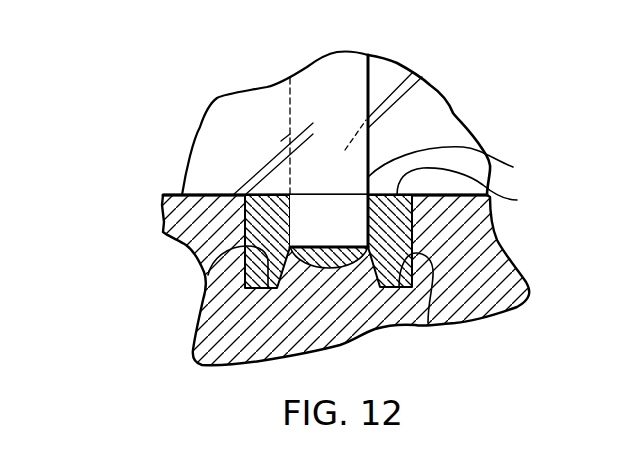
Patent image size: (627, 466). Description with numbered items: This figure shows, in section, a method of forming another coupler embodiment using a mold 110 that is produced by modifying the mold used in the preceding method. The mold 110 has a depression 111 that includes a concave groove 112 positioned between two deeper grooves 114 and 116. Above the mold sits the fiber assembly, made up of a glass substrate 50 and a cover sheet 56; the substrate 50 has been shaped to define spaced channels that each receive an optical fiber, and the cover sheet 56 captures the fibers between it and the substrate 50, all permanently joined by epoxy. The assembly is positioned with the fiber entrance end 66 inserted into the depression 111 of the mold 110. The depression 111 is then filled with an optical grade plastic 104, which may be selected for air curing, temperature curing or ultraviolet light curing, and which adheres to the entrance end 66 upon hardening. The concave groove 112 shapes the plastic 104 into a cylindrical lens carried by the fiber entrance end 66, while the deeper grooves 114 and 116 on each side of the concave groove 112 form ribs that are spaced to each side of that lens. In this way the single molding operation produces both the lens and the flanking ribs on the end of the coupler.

The glass substrate 50 is at (205, 110).
The cover sheet 56 is at (453, 115).
The fiber entrance end 66 is at (513, 167).
The optical grade plastic 104 is at (517, 200).
The mold 110 is at (497, 240).
The depression 111 is at (243, 220).
The concave groove 112 is at (332, 247).
The deeper groove 114 is at (206, 276).
The deeper groove 116 is at (428, 323).